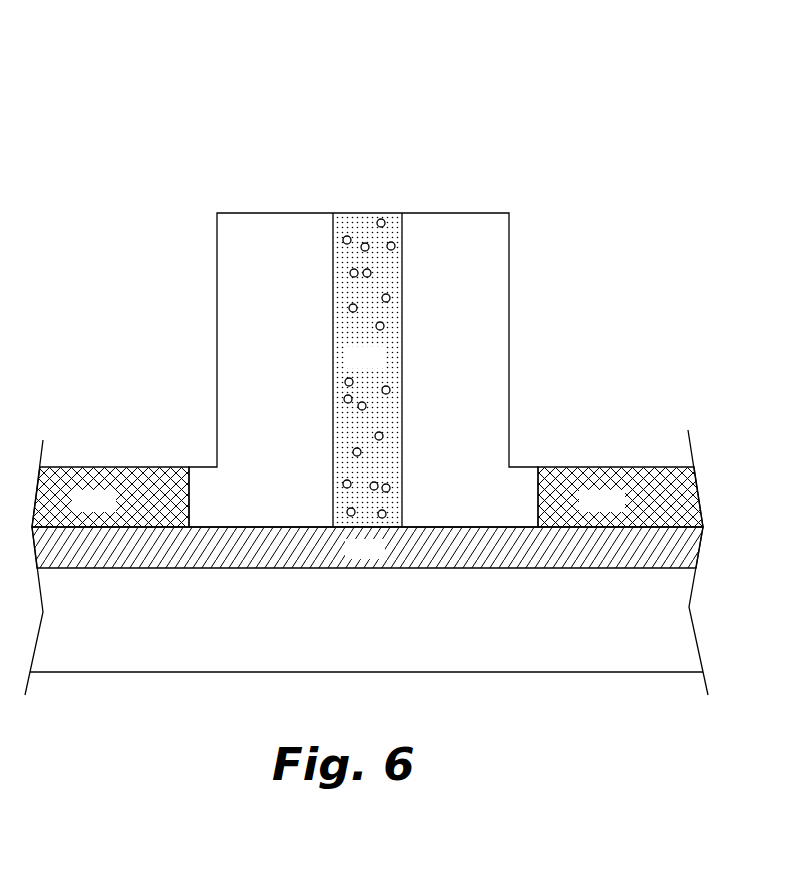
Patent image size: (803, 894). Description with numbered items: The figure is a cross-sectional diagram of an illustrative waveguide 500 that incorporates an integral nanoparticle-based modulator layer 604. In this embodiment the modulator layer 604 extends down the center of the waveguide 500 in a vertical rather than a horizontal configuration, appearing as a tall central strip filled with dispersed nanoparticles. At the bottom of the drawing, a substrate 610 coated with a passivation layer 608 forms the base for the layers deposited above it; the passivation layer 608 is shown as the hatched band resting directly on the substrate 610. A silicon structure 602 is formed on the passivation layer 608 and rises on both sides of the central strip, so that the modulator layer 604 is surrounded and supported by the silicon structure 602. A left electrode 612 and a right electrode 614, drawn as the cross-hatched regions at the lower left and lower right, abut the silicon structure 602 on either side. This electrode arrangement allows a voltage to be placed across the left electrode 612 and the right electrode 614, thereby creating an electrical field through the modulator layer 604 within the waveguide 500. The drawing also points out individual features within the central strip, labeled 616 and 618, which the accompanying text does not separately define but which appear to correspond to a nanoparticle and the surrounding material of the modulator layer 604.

The waveguide 500 is at (126, 90).
The silicon structure 602 is at (292, 422).
The nanoparticle-based modulator layer 604 is at (375, 345).
The passivation layer 608 is at (382, 557).
The substrate 610 is at (386, 626).
The left electrode 612 is at (111, 509).
The right electrode 614 is at (621, 509).
The nanoparticle 616 is at (385, 213).
The matrix material 618 is at (363, 222).